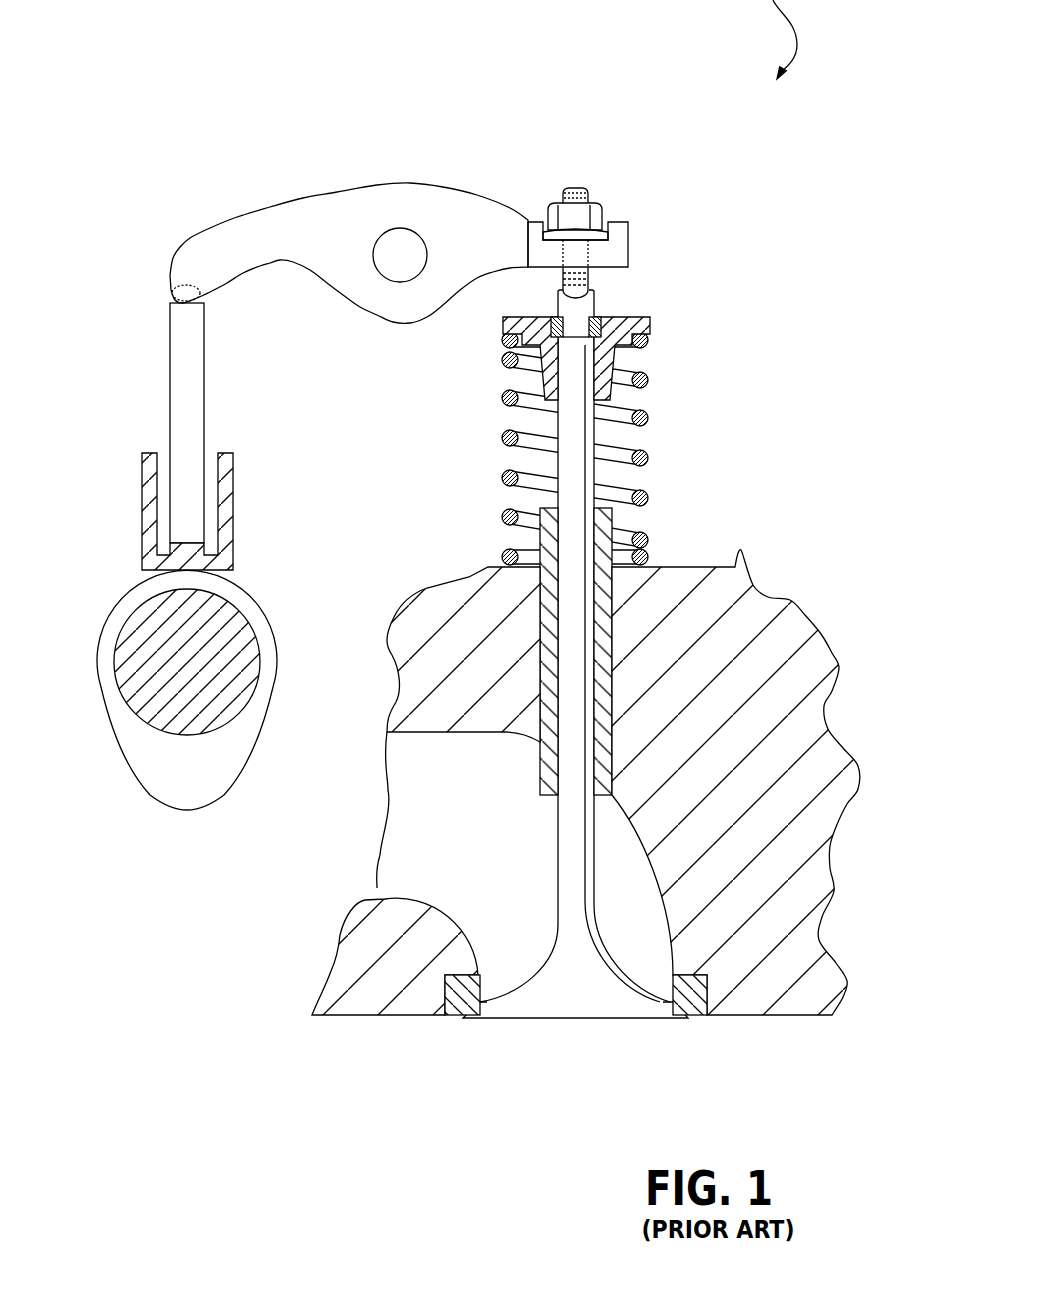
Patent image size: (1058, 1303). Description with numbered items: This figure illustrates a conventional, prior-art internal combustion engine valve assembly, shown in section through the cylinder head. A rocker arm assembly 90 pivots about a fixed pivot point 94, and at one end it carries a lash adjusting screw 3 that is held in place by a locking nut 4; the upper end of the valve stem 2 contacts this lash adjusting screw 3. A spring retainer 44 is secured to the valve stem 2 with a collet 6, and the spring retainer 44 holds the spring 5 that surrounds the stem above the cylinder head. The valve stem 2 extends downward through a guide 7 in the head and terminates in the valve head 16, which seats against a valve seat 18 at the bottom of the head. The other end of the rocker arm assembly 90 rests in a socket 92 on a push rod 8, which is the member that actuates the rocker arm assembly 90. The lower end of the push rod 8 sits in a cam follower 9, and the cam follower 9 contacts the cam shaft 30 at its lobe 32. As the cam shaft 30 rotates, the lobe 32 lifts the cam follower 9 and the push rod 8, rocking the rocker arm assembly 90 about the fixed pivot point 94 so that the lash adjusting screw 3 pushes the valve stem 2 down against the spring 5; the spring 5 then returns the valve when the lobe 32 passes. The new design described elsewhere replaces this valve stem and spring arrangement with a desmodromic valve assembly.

The valve stem 2 is at (565, 813).
The lash adjusting screw 3 is at (577, 185).
The locking nut 4 is at (607, 212).
The spring 5 is at (650, 415).
The collet 6 is at (598, 315).
The valve guide 7 is at (600, 653).
The push rod 8 is at (178, 332).
The cam follower 9 is at (142, 503).
The valve head 16 is at (565, 1008).
The valve seat insert 18 is at (688, 990).
The cam shaft 30 is at (136, 810).
The lobe 32 is at (245, 602).
The spring retainer 44 is at (650, 325).
The rocker arm assembly 90 is at (256, 204).
The pushrod socket 92 is at (172, 290).
The fixed pivot point 94 is at (402, 248).